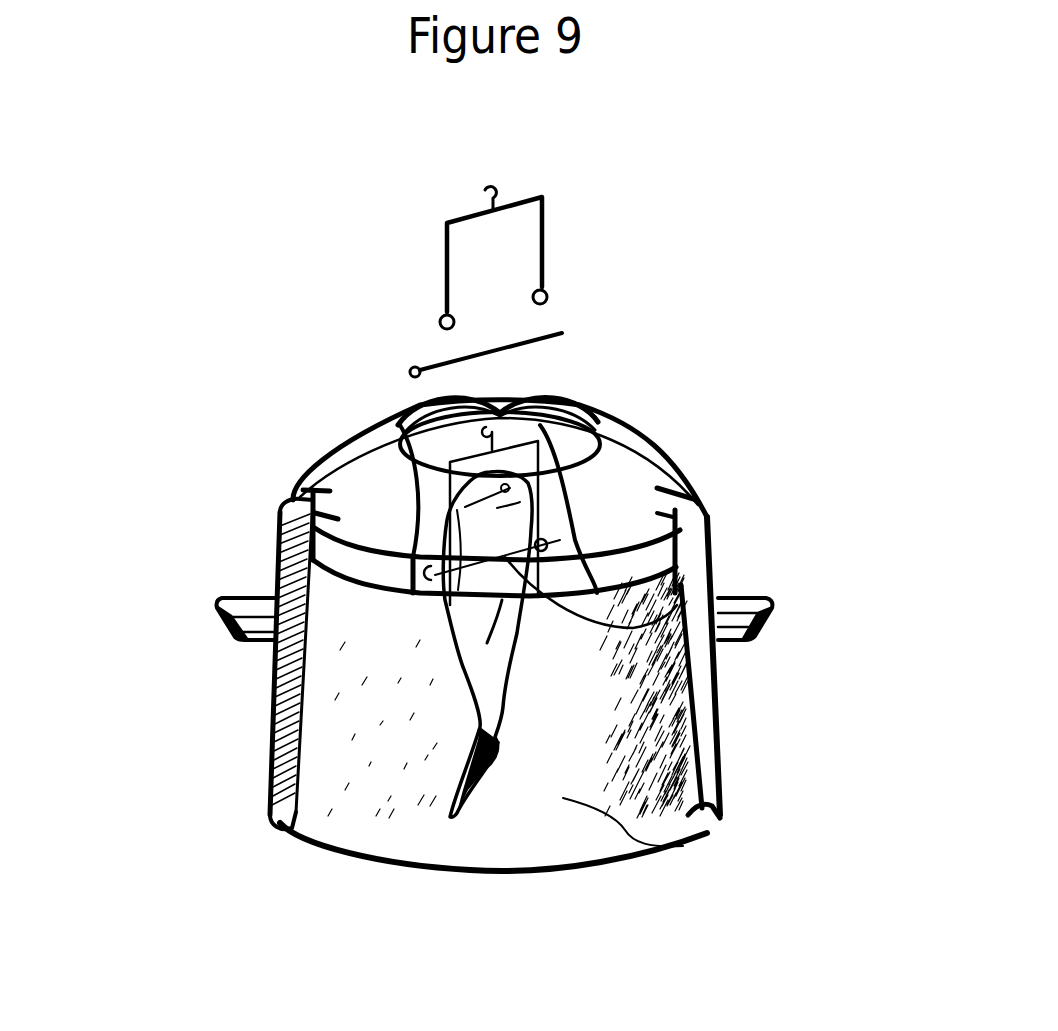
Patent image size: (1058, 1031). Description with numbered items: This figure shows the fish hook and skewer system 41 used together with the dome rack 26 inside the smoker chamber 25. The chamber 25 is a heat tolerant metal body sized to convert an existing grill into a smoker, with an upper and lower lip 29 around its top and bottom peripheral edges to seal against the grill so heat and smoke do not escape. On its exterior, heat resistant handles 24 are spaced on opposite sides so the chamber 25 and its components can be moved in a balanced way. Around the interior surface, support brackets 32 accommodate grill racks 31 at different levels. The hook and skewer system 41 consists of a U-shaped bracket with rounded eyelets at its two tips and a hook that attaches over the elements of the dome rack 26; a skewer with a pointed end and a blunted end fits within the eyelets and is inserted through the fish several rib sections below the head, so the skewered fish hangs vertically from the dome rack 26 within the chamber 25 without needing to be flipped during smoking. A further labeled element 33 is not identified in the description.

The heat resistant handles 24 is at (217, 618).
The smoker chamber 25 is at (275, 563).
The dome rack 26 is at (648, 445).
The lip 29 is at (273, 830).
The grill racks 31 is at (343, 637).
The support brackets 32 is at (683, 846).
The lid rim latch 33 is at (288, 518).
The fish hook and skewer system 41 is at (547, 297).